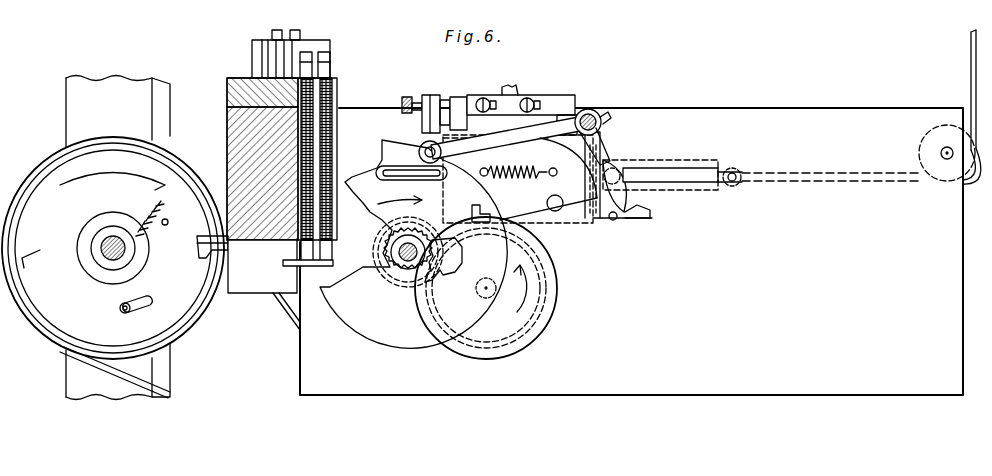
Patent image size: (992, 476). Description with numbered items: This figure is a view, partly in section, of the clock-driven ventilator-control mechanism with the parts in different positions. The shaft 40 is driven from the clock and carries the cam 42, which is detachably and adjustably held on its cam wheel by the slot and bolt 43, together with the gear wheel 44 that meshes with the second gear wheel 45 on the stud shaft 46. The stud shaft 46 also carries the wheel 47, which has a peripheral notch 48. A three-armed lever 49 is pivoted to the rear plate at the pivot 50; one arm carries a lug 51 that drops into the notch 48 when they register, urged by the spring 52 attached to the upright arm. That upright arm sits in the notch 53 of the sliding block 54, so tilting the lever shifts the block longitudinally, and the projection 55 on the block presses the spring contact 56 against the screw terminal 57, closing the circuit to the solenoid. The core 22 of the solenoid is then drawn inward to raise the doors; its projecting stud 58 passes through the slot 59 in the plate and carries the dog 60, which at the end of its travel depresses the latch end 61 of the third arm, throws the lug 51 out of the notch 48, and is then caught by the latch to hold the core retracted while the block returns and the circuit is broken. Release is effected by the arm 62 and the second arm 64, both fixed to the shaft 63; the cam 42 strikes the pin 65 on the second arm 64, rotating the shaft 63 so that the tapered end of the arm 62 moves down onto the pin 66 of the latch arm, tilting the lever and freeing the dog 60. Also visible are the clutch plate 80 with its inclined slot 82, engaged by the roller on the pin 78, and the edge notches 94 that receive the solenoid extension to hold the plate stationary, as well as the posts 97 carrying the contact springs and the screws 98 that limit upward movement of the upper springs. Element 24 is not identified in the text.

The core 22 is at (708, 178).
The strip 24 is at (970, 70).
The shaft 40 is at (408, 264).
The cam 42 is at (384, 146).
The slot and bolt 43 is at (411, 185).
The gear wheel 44 is at (388, 254).
The second gear wheel 45 is at (444, 270).
The stud shaft 46 is at (487, 278).
The wheel 47 is at (550, 297).
The peripheral notch 48 is at (472, 208).
The three-armed lever 49 is at (580, 213).
The pivot 50 is at (557, 211).
The lug 51 is at (470, 207).
The spring 52 is at (518, 183).
The notch 53 is at (578, 103).
The sliding block 54 is at (552, 95).
The projection 55 is at (462, 97).
The spring contact 56 is at (436, 95).
The screw terminal 57 is at (409, 97).
The projecting stud 58 is at (620, 170).
The slot 59 is at (735, 167).
The dog 60 is at (655, 195).
The latch end 61 is at (652, 219).
The arm 62 is at (610, 142).
The shaft 63 is at (600, 116).
The second arm 64 is at (511, 137).
The pin 65 is at (424, 146).
The pin 66 is at (632, 215).
The pin 78 is at (123, 313).
The second plate 80 is at (117, 258).
The inclined slot 82 is at (150, 302).
The notches 94 is at (22, 266).
The posts 97 is at (252, 62).
The screws 98 is at (294, 30).